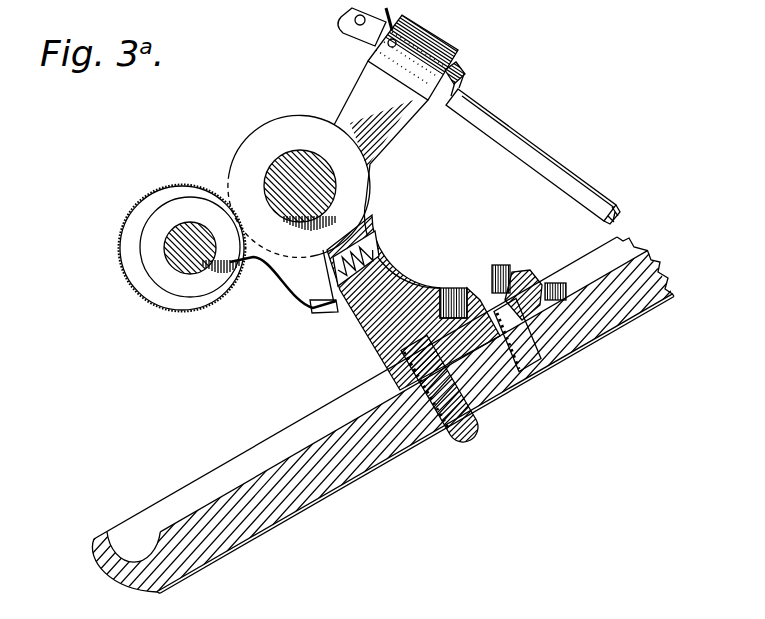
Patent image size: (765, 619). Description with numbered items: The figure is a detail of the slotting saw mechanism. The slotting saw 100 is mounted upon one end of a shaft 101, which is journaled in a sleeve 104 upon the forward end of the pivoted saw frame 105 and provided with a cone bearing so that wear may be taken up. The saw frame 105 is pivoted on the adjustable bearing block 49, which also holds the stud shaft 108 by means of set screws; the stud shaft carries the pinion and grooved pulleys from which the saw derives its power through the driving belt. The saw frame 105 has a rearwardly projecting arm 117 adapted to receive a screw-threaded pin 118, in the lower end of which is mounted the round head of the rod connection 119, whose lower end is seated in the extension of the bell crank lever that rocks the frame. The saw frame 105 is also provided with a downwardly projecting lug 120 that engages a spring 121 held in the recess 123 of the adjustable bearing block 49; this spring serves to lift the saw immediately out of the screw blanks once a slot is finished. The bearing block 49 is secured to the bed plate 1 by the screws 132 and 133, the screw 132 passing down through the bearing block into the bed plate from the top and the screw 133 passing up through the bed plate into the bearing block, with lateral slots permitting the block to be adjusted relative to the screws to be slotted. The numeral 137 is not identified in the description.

The bed plate 1 is at (562, 343).
The adjustable bearing block 49 is at (438, 282).
The slotting saw 100 is at (153, 200).
The shaft 101 is at (188, 242).
The sleeve 104 is at (175, 193).
The saw frame 105 is at (217, 181).
The stud shaft 108 is at (283, 150).
The rearwardly projecting arm 117 is at (375, 97).
The screw-threaded pin 118 is at (452, 72).
The rod connection 119 is at (521, 145).
The downwardly projecting lug 120 is at (314, 294).
The spring 121 is at (371, 240).
The recess 123 is at (386, 264).
The screw 132 is at (500, 294).
The screw 133 is at (435, 437).
The guide face 137 is at (563, 277).